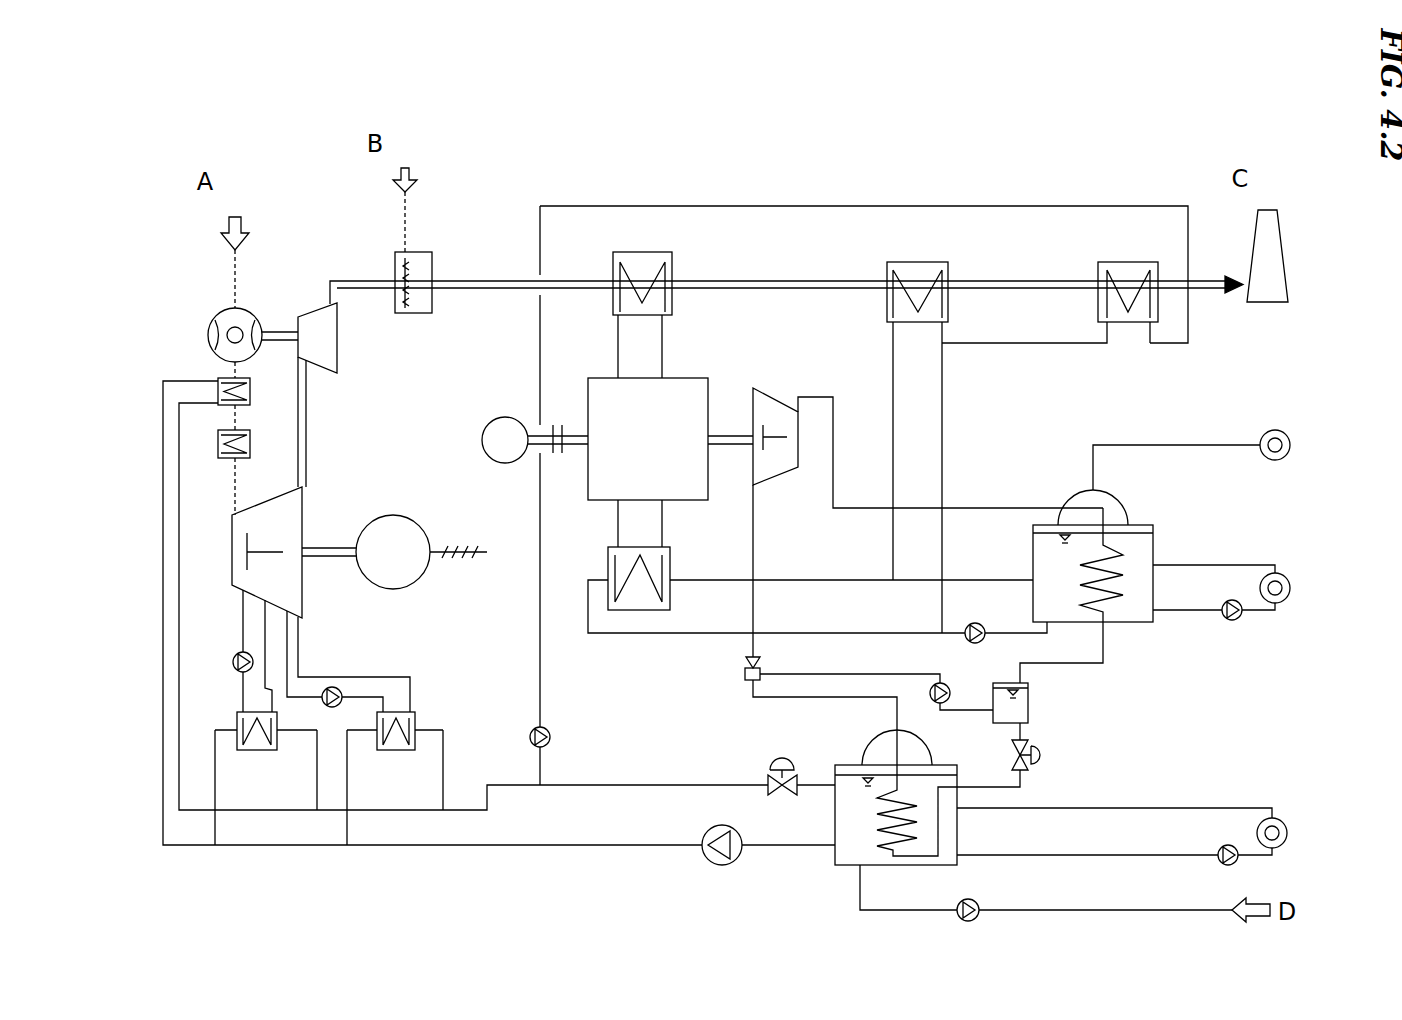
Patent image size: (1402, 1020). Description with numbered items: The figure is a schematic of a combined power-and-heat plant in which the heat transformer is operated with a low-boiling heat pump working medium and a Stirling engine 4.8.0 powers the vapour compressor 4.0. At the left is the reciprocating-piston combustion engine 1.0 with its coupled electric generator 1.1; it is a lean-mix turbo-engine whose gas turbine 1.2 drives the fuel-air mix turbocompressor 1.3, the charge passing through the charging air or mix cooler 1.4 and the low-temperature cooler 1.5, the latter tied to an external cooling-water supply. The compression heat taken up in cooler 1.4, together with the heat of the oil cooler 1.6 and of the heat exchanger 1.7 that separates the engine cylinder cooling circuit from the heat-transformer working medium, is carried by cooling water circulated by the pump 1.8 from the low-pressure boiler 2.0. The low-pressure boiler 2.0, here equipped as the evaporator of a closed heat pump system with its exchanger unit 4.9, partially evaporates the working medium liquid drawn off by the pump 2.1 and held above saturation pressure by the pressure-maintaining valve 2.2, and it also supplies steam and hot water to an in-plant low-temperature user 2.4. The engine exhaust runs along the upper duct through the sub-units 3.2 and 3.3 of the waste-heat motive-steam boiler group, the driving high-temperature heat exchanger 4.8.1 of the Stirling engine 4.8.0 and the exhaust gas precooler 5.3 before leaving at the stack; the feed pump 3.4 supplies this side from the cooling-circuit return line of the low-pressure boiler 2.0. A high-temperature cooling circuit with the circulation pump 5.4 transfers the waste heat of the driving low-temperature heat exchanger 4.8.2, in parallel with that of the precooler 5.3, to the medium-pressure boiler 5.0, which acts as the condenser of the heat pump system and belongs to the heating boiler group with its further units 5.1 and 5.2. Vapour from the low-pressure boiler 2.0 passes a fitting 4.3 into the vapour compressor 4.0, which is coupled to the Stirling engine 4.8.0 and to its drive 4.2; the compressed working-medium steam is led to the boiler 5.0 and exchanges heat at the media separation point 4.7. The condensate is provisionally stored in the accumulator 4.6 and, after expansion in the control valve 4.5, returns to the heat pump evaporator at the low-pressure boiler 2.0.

The reciprocating-piston combustion engine 1.0 is at (294, 552).
The electric generator 1.1 is at (421, 545).
The gas turbine 1.2 is at (299, 395).
The fuel-air mix turbocompressor 1.3 is at (220, 341).
The charging air or mix cooler 1.4 is at (250, 404).
The low-temperature cooler 1.5 is at (250, 472).
The oil cooler 1.6 is at (266, 778).
The heat exchanger 1.7 is at (395, 778).
The pump 1.8 is at (763, 861).
The low-pressure boiler 2.0 is at (885, 744).
The pump 2.1 is at (1046, 908).
The pressure-maintaining valve 2.2 is at (799, 761).
The in-plant low-temperature user 2.4 is at (1125, 825).
The waste-heat motive-steam high-pressure boiler sub-unit 3.2 is at (415, 298).
The waste-heat motive-steam high-pressure boiler sub-unit 3.3 is at (1050, 308).
The feed pump 3.4 is at (520, 495).
The vapour compressor 4.0 is at (928, 513).
The compressor drive 4.2 is at (535, 424).
The throttle valve 4.3 is at (830, 716).
The control valve 4.5 is at (1016, 763).
The accumulator 4.6 is at (1035, 711).
The media separation point 4.7 is at (1069, 595).
The Stirling engine 4.8.0 is at (670, 431).
The driving high-temperature heat exchanger 4.8.1 is at (669, 291).
The driving low-temperature heat exchanger 4.8.2 is at (810, 586).
The condenser tank 4.9 is at (896, 815).
The medium-pressure boiler 5.0 is at (1159, 485).
The medium-pressure heating boiler sub-unit 5.1 is at (1225, 581).
The medium-pressure heating boiler sub-unit 5.2 is at (1278, 434).
The exhaust gas precooler 5.3 is at (917, 447).
The circulation pump 5.4 is at (972, 618).